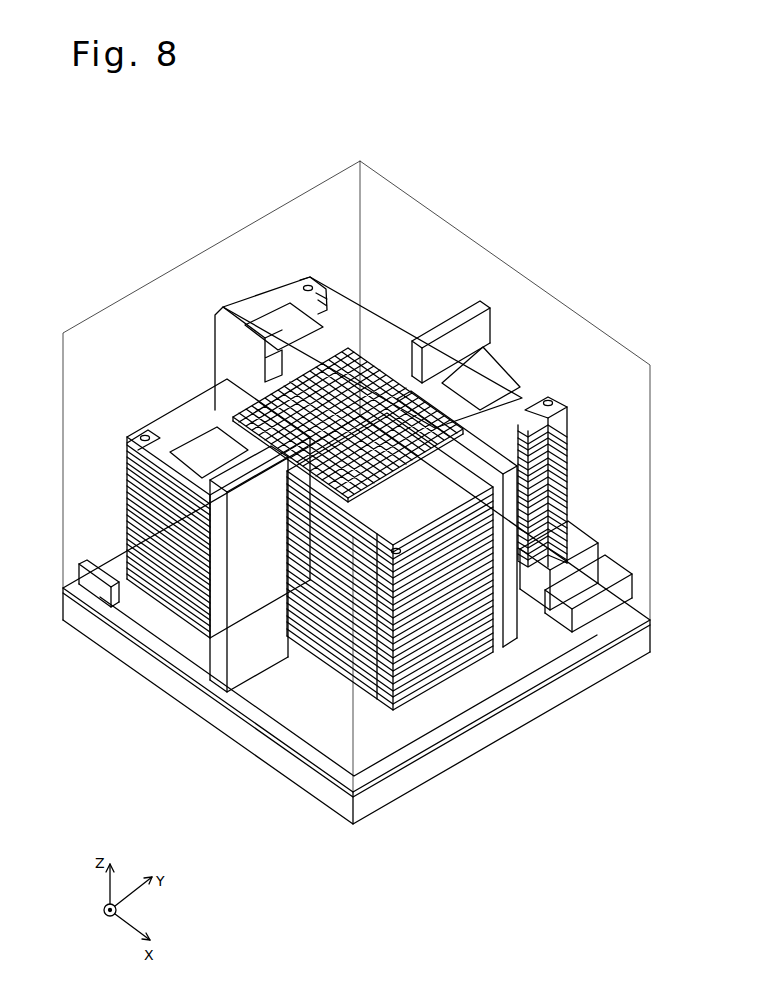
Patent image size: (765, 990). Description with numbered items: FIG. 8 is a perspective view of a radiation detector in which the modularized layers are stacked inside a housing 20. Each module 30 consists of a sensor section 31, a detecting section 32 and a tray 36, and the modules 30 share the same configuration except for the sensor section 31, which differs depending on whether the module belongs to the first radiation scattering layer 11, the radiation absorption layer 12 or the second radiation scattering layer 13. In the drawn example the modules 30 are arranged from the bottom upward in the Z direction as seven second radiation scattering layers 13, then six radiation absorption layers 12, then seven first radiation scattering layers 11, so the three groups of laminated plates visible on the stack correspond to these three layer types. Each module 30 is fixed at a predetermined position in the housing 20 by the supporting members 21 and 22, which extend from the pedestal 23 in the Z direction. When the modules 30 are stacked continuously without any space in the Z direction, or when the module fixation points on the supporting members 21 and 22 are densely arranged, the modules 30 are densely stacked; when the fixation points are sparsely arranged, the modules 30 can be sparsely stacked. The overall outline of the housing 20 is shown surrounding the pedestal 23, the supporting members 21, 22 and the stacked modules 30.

The first radiation scattering layer 11 is at (121, 442).
The radiation absorption layer 12 is at (121, 490).
The second radiation scattering layer 13 is at (121, 537).
The housing 20 is at (595, 323).
The supporting member 21 is at (399, 555).
The supporting member 22 is at (567, 494).
The pedestal 23 is at (280, 732).
The module 30 is at (389, 332).
The sensor section 31 is at (388, 388).
The detecting section 32 is at (491, 370).
The tray 36 is at (352, 335).